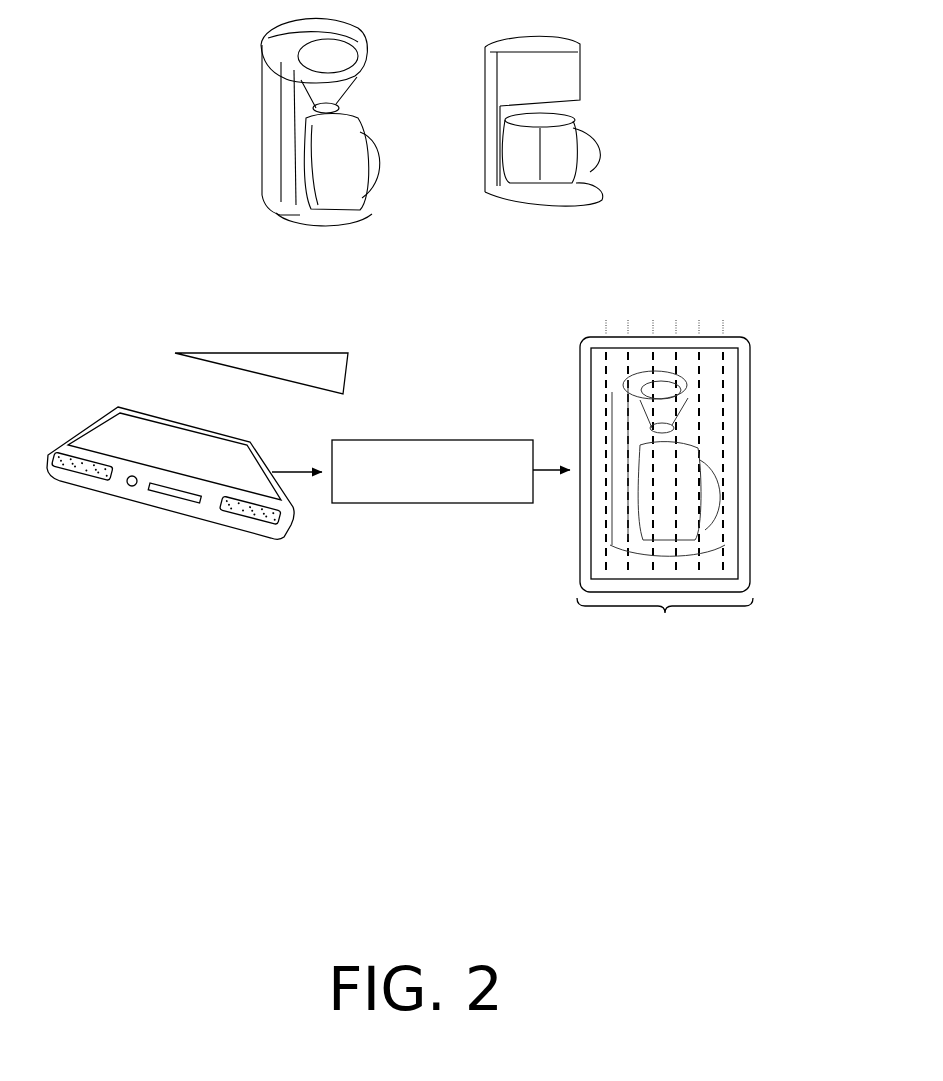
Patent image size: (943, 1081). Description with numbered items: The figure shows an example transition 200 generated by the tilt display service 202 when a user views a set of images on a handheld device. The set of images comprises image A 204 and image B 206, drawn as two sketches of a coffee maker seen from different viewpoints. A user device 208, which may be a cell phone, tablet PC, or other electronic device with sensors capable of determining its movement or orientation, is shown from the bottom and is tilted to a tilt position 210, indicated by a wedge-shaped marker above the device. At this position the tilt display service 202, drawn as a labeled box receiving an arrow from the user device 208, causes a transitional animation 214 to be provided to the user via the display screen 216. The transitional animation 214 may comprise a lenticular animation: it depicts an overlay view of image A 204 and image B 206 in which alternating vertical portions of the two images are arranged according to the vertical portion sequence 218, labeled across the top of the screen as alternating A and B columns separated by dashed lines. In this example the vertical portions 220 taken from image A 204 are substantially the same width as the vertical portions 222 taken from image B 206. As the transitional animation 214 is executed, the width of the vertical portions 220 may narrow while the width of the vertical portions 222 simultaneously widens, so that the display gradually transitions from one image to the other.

The transition 200 is at (634, 902).
The tilt display service 202 is at (432, 471).
The image A 204 is at (322, 165).
The image B 206 is at (558, 142).
The user device 208 is at (118, 407).
The tilt position 210 is at (348, 353).
The transitional animation 214 is at (653, 455).
The display screen 216 is at (580, 365).
The vertical portion sequence 218 is at (691, 423).
The vertical portions 220 is at (690, 409).
The vertical portions 222 is at (669, 491).